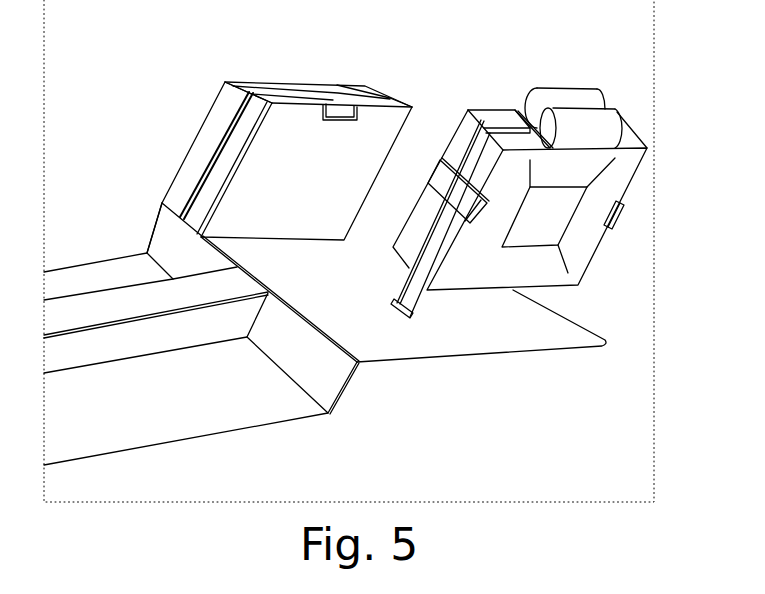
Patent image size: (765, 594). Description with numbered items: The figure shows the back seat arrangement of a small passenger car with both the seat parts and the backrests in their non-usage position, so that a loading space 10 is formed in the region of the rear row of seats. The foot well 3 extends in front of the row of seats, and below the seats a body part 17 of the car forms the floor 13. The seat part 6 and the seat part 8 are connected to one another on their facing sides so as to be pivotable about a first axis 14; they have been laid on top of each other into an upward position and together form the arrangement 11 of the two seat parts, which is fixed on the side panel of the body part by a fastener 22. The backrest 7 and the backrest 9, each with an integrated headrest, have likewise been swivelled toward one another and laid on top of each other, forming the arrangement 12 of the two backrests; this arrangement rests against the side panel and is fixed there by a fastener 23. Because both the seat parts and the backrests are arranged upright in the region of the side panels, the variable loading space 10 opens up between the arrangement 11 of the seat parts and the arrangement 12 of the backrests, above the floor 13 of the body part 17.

The foot well 3 is at (293, 433).
The seat part 6 is at (192, 178).
The backrest 7 is at (487, 107).
The seat part 8 is at (207, 198).
The backrest 9 is at (624, 175).
The loading space 10 is at (376, 238).
The arrangement of the two seat parts 11 is at (380, 87).
The arrangement of the two backrests 12 is at (648, 120).
The floor 13 is at (360, 322).
The first axis 14 is at (262, 80).
The body part 17 is at (624, 343).
The fastener 22 is at (308, 80).
The fastener 23 is at (624, 220).